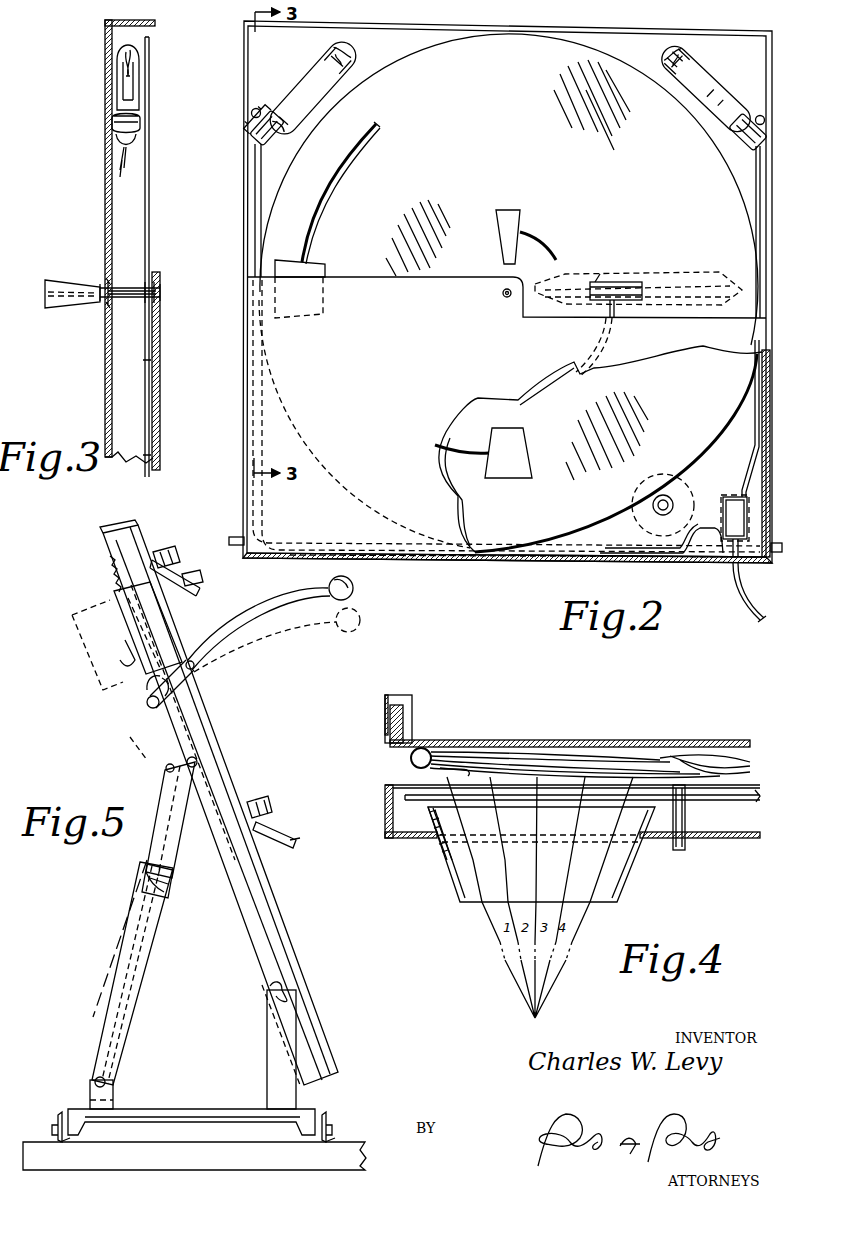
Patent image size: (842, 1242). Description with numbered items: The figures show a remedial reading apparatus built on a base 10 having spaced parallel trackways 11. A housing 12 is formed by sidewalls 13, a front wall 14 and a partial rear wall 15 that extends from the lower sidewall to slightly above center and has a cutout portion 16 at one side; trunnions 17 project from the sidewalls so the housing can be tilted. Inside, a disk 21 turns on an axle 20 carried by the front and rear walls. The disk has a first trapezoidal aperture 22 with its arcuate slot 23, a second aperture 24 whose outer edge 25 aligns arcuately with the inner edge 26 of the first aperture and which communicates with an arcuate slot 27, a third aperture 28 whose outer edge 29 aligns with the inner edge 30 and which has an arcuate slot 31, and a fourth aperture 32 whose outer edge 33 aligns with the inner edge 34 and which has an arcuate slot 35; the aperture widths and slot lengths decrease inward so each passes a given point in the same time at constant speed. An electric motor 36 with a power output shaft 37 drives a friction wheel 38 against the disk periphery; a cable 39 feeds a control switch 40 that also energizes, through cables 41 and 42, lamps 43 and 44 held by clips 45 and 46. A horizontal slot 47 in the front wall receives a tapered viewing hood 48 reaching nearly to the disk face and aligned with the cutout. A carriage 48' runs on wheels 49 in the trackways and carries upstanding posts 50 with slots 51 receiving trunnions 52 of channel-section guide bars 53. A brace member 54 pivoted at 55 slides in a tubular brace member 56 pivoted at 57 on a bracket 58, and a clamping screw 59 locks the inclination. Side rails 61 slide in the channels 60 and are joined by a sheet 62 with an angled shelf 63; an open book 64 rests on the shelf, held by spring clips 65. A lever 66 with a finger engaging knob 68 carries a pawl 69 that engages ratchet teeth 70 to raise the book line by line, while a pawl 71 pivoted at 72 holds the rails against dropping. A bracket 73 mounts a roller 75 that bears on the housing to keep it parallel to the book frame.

In FIG. 5, the base 10 is at (292, 1170).
In FIG. 5, the trackways 11 is at (70, 1156).
In FIG. 3, the housing 12 is at (100, 387).
In FIG. 2, the housing 12 is at (432, 564).
In FIG. 4, the housing 12 is at (384, 840).
In FIG. 3, the sidewalls 13 is at (138, 16).
In FIG. 2, the sidewalls 13 is at (610, 26).
In FIG. 4, the sidewalls 13 is at (390, 816).
In FIG. 3, the front wall 14 is at (106, 200).
In FIG. 4, the front wall 14 is at (736, 839).
In FIG. 3, the rear wall 15 is at (160, 347).
In FIG. 2, the rear wall 15 is at (476, 278).
In FIG. 4, the rear wall 15 is at (396, 788).
In FIG. 2, the cutout portion 16 is at (704, 319).
In FIG. 2, the trunnions 17 is at (232, 538).
In FIG. 3, the axle 20 is at (160, 295).
In FIG. 2, the axle 20 is at (503, 296).
In FIG. 4, the axle 20 is at (686, 818).
In FIG. 3, the disk 21 is at (142, 188).
In FIG. 2, the disk 21 is at (595, 58).
In FIG. 4, the disk 21 is at (738, 802).
In FIG. 2, the first trapezoidal shaped aperture 22 is at (292, 316).
In FIG. 2, the arcuate slot 23 is at (336, 174).
In FIG. 2, the second trapezoidal shaped aperture 24 is at (524, 438).
In FIG. 2, the outer edge 25 is at (508, 478).
In FIG. 2, the inner edge 26 is at (322, 274).
In FIG. 2, the arcuate slot 27 is at (462, 452).
In FIG. 2, the third trapezoidal shaped aperture 28 is at (606, 308).
In FIG. 2, the outer edge 29 is at (648, 283).
In FIG. 2, the inner edge 30 is at (514, 428).
In FIG. 2, the arcuate slot 31 is at (612, 332).
In FIG. 2, the fourth trapezoidal shaped aperture 32 is at (497, 230).
In FIG. 2, the outer edge 33 is at (507, 210).
In FIG. 2, the inner edge 34 is at (596, 292).
In FIG. 2, the arcuate slot 35 is at (538, 240).
In FIG. 2, the electric motor 36 is at (666, 494).
In FIG. 2, the power output shaft 37 is at (670, 504).
In FIG. 2, the friction wheel 38 is at (674, 507).
In FIG. 2, the cable 39 is at (744, 608).
In FIG. 2, the control switch 40 is at (723, 519).
In FIG. 2, the cable 41 is at (755, 444).
In FIG. 2, the cable 42 is at (584, 552).
In FIG. 2, the lamp 43 is at (710, 86).
In FIG. 3, the lamp 44 is at (115, 85).
In FIG. 2, the lamp 44 is at (302, 78).
In FIG. 2, the clip 45 is at (750, 120).
In FIG. 3, the clip 46 is at (112, 116).
In FIG. 2, the clip 46 is at (258, 114).
In FIG. 3, the slot 47 is at (108, 282).
In FIG. 4, the slot 47 is at (438, 836).
In FIG. 3, the viewing hood 48 is at (71, 312).
In FIG. 2, the viewing hood 48 is at (638, 274).
In FIG. 4, the viewing hood 48 is at (529, 854).
In FIG. 5, the carriage 48' is at (191, 1107).
In FIG. 5, the wheels 49 is at (56, 1120).
In FIG. 5, the posts 50 is at (267, 1066).
In FIG. 5, the slots 51 is at (270, 990).
In FIG. 5, the trunnions 52 is at (280, 1006).
In FIG. 5, the guide bars 53 is at (272, 922).
In FIG. 4, the guide bars 53 is at (408, 704).
In FIG. 5, the brace member 54 is at (174, 864).
In FIG. 5, the pivot 55 is at (198, 762).
In FIG. 5, the tubular brace member 56 is at (128, 1040).
In FIG. 5, the pivot 57 is at (94, 1084).
In FIG. 5, the bracket 58 is at (114, 1094).
In FIG. 5, the clamping screw 59 is at (162, 898).
In FIG. 4, the channels 60 is at (396, 704).
In FIG. 5, the side rails 61 is at (112, 562).
In FIG. 4, the side rails 61 is at (410, 718).
In FIG. 5, the sheet 62 is at (130, 530).
In FIG. 4, the sheet 62 is at (598, 740).
In FIG. 5, the shelf 63 is at (274, 842).
In FIG. 4, the book 64 is at (646, 746).
In FIG. 5, the spring clips 65 is at (170, 553).
In FIG. 4, the spring clips 65 is at (412, 762).
In FIG. 5, the lever 66 is at (266, 614).
In FIG. 5, the finger engaging knob 68 is at (350, 584).
In FIG. 5, the pawl 69 is at (146, 688).
In FIG. 5, the ratchet teeth 70 is at (160, 716).
In FIG. 5, the pawl 71 is at (126, 650).
In FIG. 5, the pivot 72 is at (128, 632).
In FIG. 5, the bracket 73 is at (180, 590).
In FIG. 5, the roller 75 is at (202, 577).